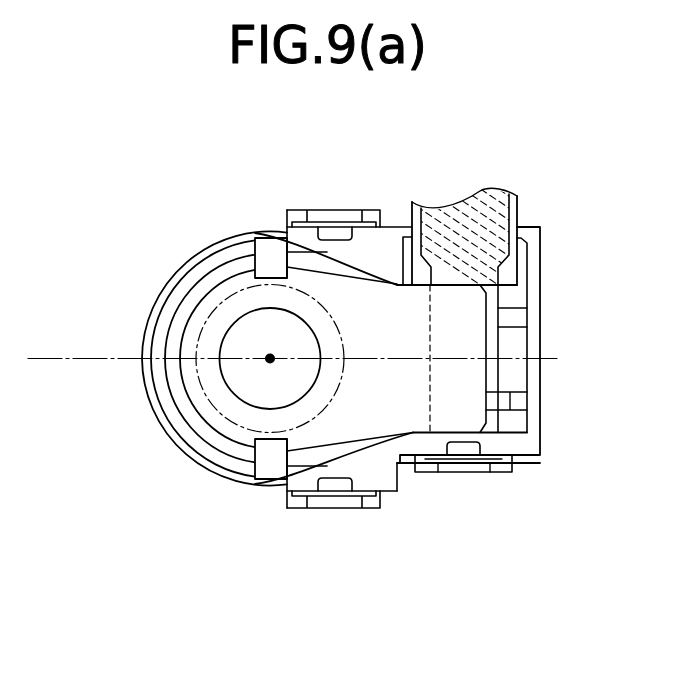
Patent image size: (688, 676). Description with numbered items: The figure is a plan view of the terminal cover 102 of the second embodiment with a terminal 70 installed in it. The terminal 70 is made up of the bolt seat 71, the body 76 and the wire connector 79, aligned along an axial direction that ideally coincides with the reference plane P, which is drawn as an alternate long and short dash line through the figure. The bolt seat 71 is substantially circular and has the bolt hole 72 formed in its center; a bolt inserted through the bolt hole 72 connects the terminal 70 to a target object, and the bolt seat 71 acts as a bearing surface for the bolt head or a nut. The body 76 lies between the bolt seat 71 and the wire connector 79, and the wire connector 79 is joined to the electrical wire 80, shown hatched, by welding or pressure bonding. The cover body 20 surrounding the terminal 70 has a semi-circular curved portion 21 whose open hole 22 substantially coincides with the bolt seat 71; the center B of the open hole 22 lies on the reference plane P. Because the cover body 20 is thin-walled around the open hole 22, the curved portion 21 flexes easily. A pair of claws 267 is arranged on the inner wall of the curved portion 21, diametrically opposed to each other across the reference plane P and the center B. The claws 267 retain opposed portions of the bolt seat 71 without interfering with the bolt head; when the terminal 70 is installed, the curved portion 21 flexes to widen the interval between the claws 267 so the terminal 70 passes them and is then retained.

The cover body 20 is at (203, 478).
The curved portion 21 is at (154, 417).
The open hole 22 is at (190, 435).
The terminal 70 is at (309, 266).
The bolt seat 71 is at (238, 292).
The bolt hole 72 is at (238, 347).
The body 76 is at (385, 378).
The wire connector 79 is at (458, 333).
The electrical wire 80 is at (477, 215).
The terminal cover 102 is at (573, 188).
The claws 267 is at (265, 262).
The center of the open hole B is at (268, 357).
The reference plane P is at (48, 357).